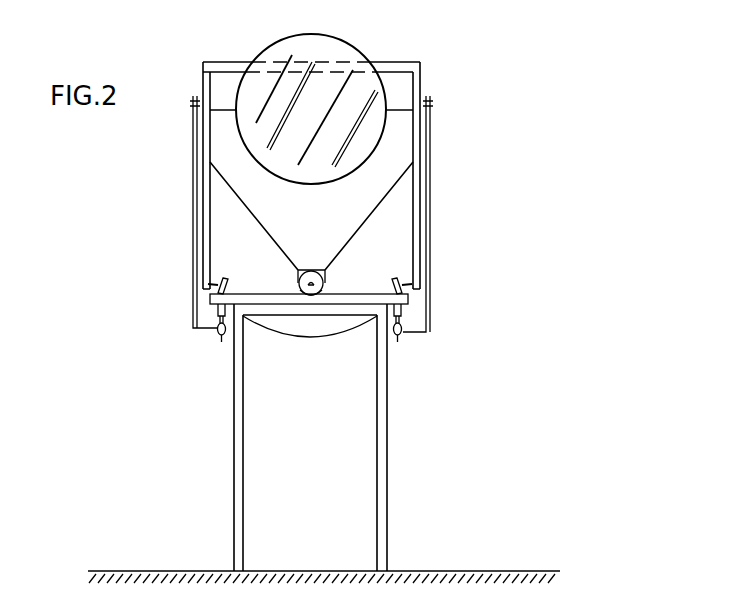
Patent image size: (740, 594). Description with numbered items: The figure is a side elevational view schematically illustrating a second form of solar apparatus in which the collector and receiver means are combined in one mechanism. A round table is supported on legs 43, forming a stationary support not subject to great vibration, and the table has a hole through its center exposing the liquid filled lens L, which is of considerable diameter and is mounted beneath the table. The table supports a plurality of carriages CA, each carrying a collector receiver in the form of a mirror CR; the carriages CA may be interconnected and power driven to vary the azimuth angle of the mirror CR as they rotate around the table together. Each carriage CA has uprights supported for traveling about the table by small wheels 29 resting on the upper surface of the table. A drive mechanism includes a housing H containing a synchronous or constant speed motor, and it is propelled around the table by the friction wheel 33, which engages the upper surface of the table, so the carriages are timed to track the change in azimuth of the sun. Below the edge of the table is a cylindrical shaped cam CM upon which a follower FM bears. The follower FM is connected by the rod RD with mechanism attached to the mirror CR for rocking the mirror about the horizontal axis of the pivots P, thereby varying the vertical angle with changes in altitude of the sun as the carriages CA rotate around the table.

The carriage CA is at (203, 213).
The rod RD is at (193, 161).
The pivot P is at (214, 111).
The mirror CR is at (297, 136).
The housing H is at (316, 270).
The friction wheel 33 is at (322, 291).
The cam CM is at (217, 310).
The wheel 29 is at (224, 284).
The follower FM is at (220, 341).
The lens L is at (328, 333).
The leg 43 is at (234, 435).